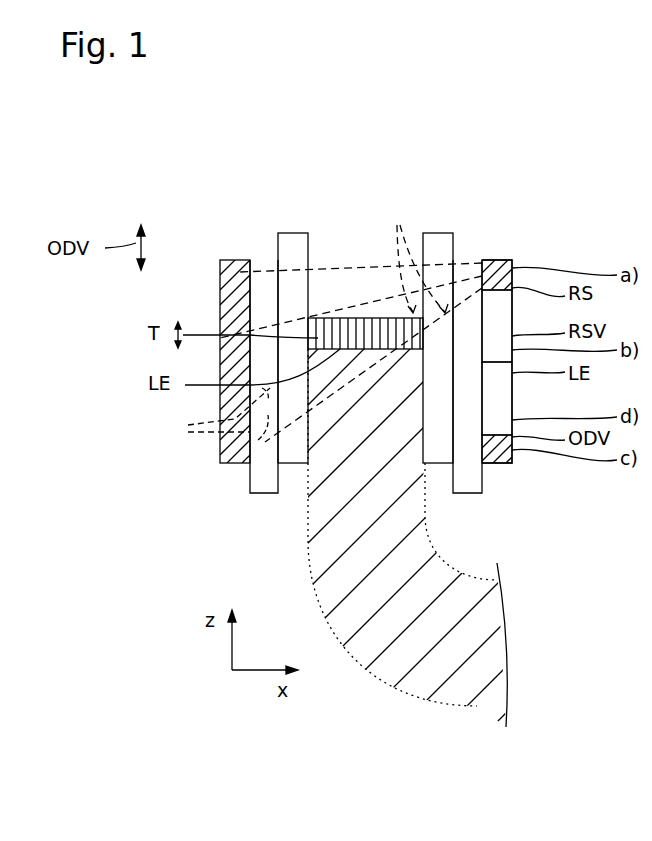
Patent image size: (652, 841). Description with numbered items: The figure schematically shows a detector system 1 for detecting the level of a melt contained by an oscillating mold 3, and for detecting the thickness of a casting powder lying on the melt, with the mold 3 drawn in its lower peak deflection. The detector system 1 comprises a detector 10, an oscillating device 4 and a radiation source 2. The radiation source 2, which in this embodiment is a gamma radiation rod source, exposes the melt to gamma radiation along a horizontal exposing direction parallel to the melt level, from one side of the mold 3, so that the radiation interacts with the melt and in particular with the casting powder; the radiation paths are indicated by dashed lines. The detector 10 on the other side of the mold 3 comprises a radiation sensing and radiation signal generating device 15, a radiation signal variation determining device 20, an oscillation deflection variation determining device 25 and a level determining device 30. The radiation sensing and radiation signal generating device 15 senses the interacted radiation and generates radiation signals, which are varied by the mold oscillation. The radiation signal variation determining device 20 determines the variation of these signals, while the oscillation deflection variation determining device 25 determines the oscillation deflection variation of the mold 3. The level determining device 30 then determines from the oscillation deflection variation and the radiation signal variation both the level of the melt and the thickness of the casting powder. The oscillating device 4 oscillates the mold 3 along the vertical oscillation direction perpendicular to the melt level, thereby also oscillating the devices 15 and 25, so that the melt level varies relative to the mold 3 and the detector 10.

The detector system 1 is at (206, 212).
The radiation source 2 is at (234, 260).
The oscillating mold 3 is at (438, 233).
The oscillating device 4 is at (262, 483).
The detector 10 is at (488, 262).
The radiation sensing and radiation signal generating device 15 is at (508, 270).
The radiation signal variation determining device 20 is at (512, 313).
The oscillation deflection variation determining device 25 is at (512, 462).
The level determining device 30 is at (512, 397).